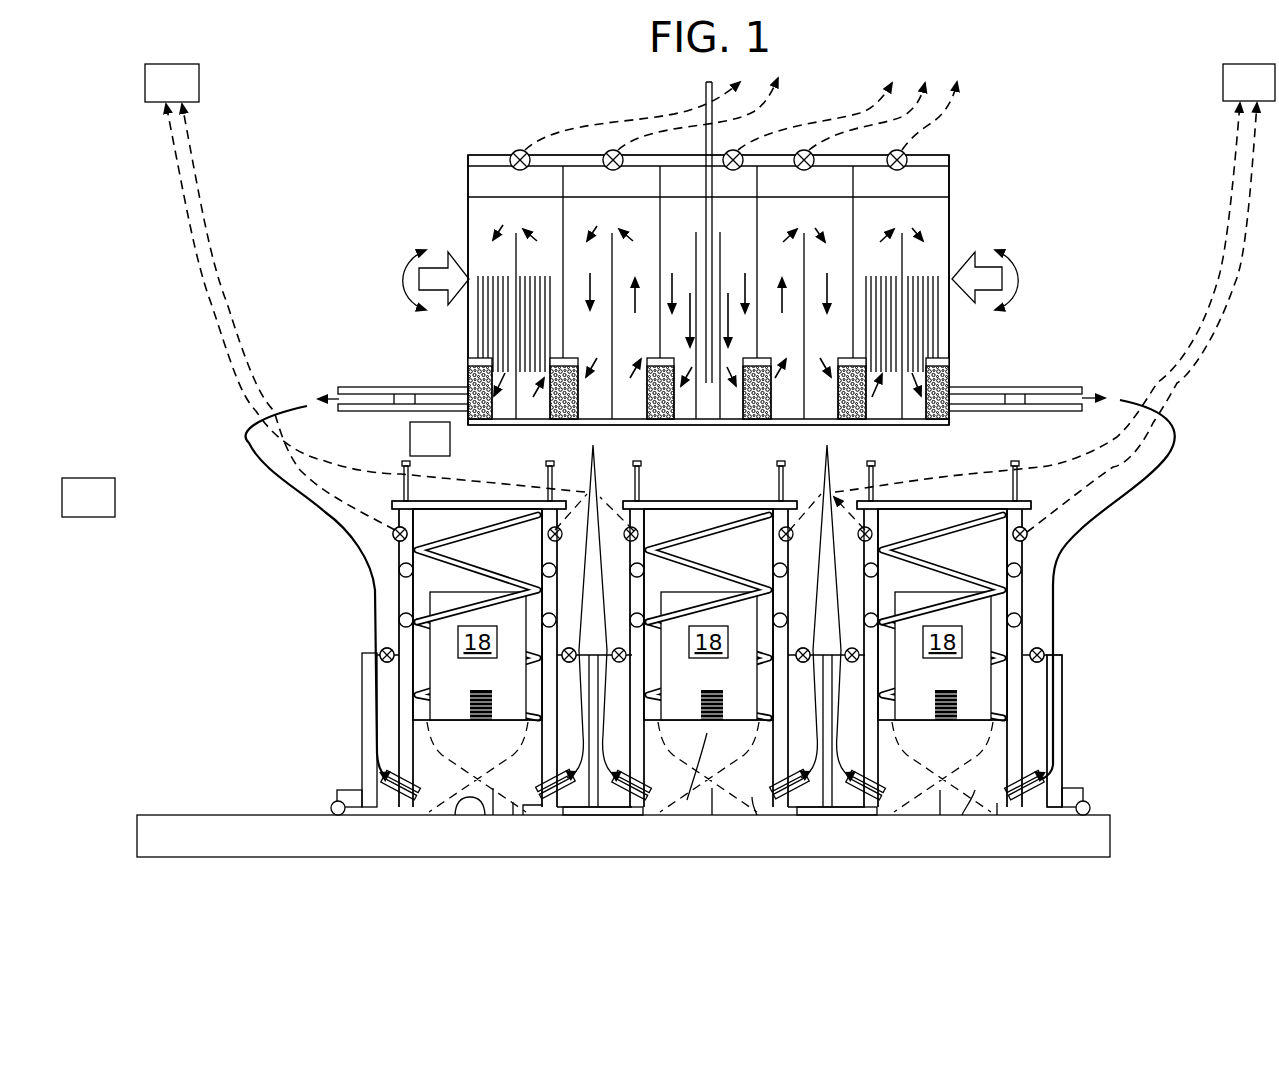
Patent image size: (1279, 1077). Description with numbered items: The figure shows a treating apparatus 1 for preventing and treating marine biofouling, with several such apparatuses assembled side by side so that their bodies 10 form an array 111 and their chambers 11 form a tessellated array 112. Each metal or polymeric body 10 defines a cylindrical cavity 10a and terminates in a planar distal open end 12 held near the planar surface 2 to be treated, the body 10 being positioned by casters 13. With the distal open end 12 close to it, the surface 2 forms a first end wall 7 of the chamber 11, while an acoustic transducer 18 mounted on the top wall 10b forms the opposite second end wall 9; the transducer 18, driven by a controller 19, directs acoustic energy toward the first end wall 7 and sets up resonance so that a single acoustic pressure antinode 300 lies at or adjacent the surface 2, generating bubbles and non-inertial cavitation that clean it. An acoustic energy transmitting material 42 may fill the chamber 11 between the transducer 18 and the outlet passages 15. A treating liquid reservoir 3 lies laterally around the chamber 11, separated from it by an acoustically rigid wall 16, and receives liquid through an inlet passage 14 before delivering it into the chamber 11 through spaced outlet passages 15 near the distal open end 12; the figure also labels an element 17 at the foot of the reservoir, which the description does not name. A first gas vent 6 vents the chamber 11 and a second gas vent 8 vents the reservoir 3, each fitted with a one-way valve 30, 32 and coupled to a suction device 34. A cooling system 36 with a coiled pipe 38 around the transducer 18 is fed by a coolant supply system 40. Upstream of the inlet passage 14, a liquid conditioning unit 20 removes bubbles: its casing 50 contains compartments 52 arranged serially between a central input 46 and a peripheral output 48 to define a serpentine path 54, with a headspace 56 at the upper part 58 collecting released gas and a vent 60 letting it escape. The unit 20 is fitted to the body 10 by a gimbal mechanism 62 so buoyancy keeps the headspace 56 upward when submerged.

The treating apparatus 1 is at (690, 224).
The planar surface 2 is at (623, 805).
The treating liquid reservoir 3 is at (709, 784).
The first gas vent 6 is at (719, 523).
The first end wall 7 is at (447, 845).
The second gas vent 8 is at (704, 614).
The second end wall 9 is at (964, 848).
The body 10 is at (714, 617).
The cavity 10a is at (709, 617).
The top wall 10b is at (711, 473).
The chamber 11 is at (691, 854).
The distal open end 12 is at (717, 855).
The casters 13 is at (1122, 814).
The inlet passage 14 is at (717, 626).
The outlet passages 15 is at (683, 836).
The wall 16 is at (710, 590).
The nozzle 17 is at (624, 836).
The acoustic transducer 18 is at (710, 614).
The controller 19 is at (88, 497).
The liquid conditioning unit 20 is at (762, 290).
The one-way valve 30 is at (345, 547).
The one-way valve 32 is at (1096, 731).
The suction device 34 is at (710, 298).
The cooling system 36 is at (942, 527).
The coiled pipe 38 is at (943, 514).
The coolant supply system 40 is at (430, 439).
The acoustic energy transmitting material 42 is at (679, 832).
The input 46 is at (670, 219).
The output 48 is at (711, 366).
The casing 50 is at (664, 170).
The compartments 52 is at (691, 279).
The serpentine path 54 is at (709, 249).
The headspace 56 is at (768, 122).
The upper part 58 is at (692, 141).
The vent 60 is at (708, 116).
The gimbal mechanism 62 is at (714, 276).
The array 111 is at (1129, 769).
The array 112 is at (502, 864).
The acoustic pressure antinode 300 is at (776, 864).